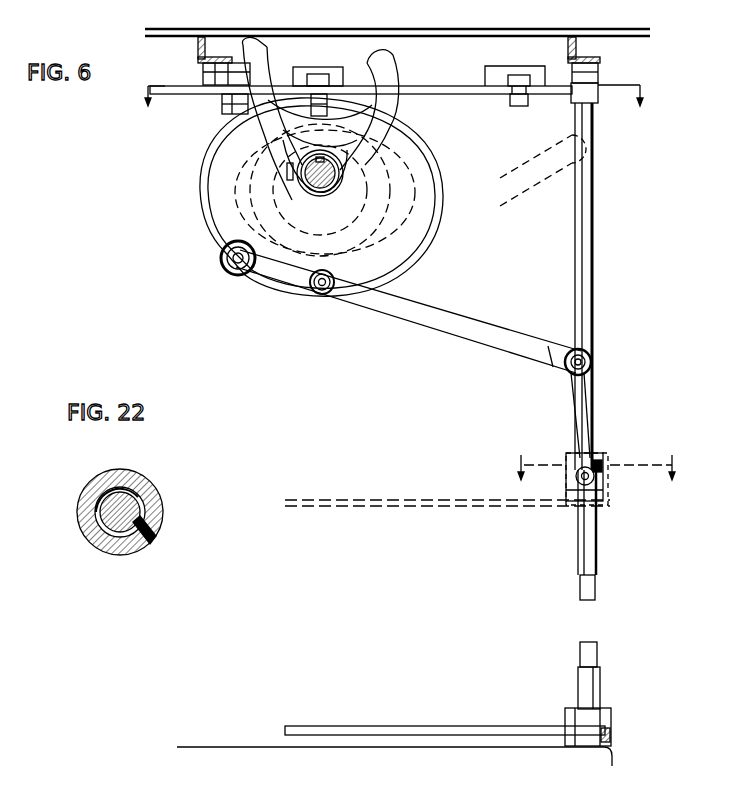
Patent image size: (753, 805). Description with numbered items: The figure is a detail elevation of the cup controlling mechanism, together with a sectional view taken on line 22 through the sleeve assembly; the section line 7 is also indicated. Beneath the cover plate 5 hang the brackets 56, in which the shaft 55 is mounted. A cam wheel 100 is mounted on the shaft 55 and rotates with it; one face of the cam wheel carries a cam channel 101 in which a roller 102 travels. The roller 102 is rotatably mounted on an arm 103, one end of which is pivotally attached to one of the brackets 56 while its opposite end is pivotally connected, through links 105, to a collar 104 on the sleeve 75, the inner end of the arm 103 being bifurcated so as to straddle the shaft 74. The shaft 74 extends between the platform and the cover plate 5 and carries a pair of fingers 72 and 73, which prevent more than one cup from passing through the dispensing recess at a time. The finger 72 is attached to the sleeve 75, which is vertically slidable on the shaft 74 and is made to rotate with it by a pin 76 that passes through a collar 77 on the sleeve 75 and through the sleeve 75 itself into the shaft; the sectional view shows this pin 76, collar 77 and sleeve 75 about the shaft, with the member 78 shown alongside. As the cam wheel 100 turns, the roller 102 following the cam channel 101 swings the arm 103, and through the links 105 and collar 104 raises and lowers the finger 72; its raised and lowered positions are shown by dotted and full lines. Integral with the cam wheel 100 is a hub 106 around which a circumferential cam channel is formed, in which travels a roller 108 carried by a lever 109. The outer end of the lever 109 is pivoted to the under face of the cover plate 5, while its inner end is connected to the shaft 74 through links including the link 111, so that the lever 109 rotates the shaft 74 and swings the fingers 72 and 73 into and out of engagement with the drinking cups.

In FIG. 6, the cover plate 5 is at (230, 29).
In FIG. 6, the section line 7- 7 is at (393, 99).
In FIG. 6, the section line 22- 22 is at (596, 467).
In FIG. 6, the shaft 55 is at (306, 173).
In FIG. 6, the brackets 56 is at (252, 222).
In FIG. 6, the finger 72 is at (472, 727).
In FIG. 6, the finger 73 is at (482, 736).
In FIG. 6, the shaft 74 is at (596, 340).
In FIG. 6, the sleeve 75 is at (600, 689).
In FIG. 22, the sleeve 75 is at (98, 509).
In FIG. 6, the pin 76 is at (604, 472).
In FIG. 22, the pin 76 is at (154, 541).
In FIG. 6, the collar 77 is at (600, 464).
In FIG. 22, the collar 77 is at (164, 504).
In FIG. 6, the lower tube 78 is at (596, 389).
In FIG. 22, the lower tube 78 is at (96, 547).
In FIG. 6, the cam wheel 100 is at (383, 226).
In FIG. 6, the cam channel 101 is at (430, 164).
In FIG. 6, the roller 102 is at (313, 292).
In FIG. 6, the arm 103 is at (462, 333).
In FIG. 6, the collar 104 is at (570, 470).
In FIG. 6, the links 105 is at (577, 431).
In FIG. 6, the hub 106 is at (383, 190).
In FIG. 6, the roller 108 is at (395, 112).
In FIG. 6, the lever 109 is at (447, 92).
In FIG. 6, the link 111 is at (544, 90).